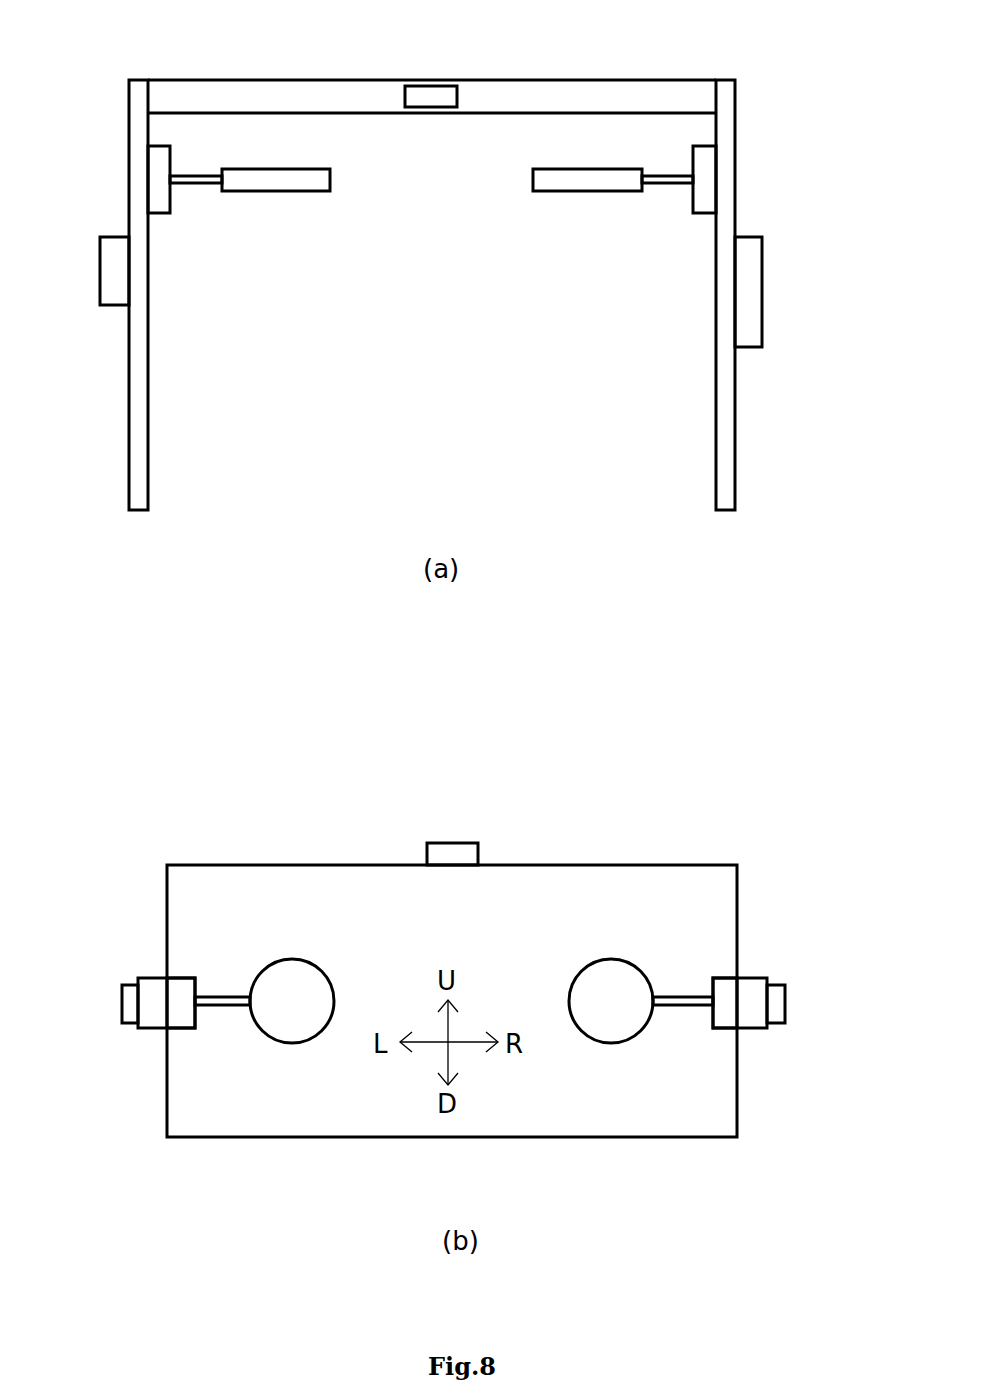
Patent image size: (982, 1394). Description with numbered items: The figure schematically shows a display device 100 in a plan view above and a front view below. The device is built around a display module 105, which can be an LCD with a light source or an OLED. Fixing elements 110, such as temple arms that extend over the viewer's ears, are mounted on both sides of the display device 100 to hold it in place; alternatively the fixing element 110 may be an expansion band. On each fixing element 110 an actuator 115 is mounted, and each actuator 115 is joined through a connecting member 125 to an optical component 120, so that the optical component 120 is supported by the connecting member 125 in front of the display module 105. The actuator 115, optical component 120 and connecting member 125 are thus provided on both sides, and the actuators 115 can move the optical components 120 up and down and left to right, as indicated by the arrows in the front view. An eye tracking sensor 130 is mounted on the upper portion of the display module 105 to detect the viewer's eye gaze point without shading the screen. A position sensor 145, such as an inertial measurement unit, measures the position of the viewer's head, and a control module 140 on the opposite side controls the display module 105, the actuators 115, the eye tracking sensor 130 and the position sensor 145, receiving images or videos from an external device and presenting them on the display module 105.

The display device 100 is at (787, 31).
The display module 105 is at (568, 80).
The fixing element 110 is at (147, 427).
The actuator 115 is at (153, 213).
The optical component 120 is at (297, 191).
The connecting member 125 is at (200, 186).
The eye tracking sensor 130 is at (422, 97).
The control module 140 is at (762, 277).
The position sensor 145 is at (100, 278).